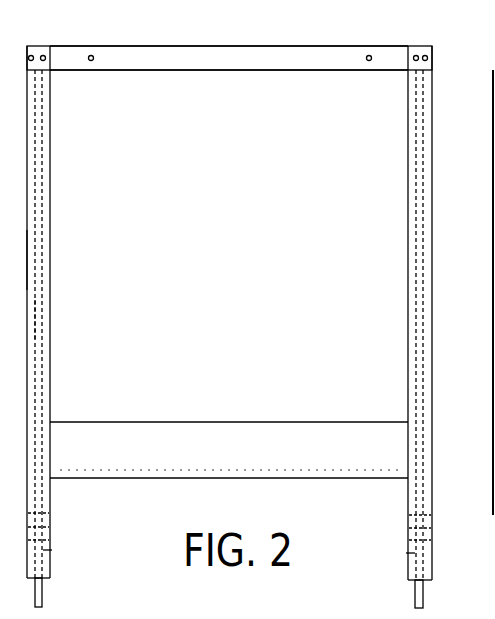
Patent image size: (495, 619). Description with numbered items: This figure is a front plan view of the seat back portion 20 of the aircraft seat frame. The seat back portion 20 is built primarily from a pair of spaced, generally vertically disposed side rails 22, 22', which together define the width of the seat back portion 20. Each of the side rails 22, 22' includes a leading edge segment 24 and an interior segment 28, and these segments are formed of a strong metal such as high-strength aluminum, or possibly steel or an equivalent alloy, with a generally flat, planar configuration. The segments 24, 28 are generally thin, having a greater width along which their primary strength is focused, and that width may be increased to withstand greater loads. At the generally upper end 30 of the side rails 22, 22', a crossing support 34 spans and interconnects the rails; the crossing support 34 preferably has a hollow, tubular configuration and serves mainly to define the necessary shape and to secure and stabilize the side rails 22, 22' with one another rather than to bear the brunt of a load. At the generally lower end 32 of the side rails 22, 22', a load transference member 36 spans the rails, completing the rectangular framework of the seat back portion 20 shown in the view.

The seat back portion 20 is at (448, 163).
The side rail 22 is at (77, 312).
The side rail 22' is at (450, 313).
The leading edge segment 24 is at (50, 260).
The interior segment 28 is at (53, 325).
The upper end 30 is at (32, 71).
The lower end 32 is at (55, 553).
The crossing support 34 is at (268, 57).
The load transference member 36 is at (267, 432).